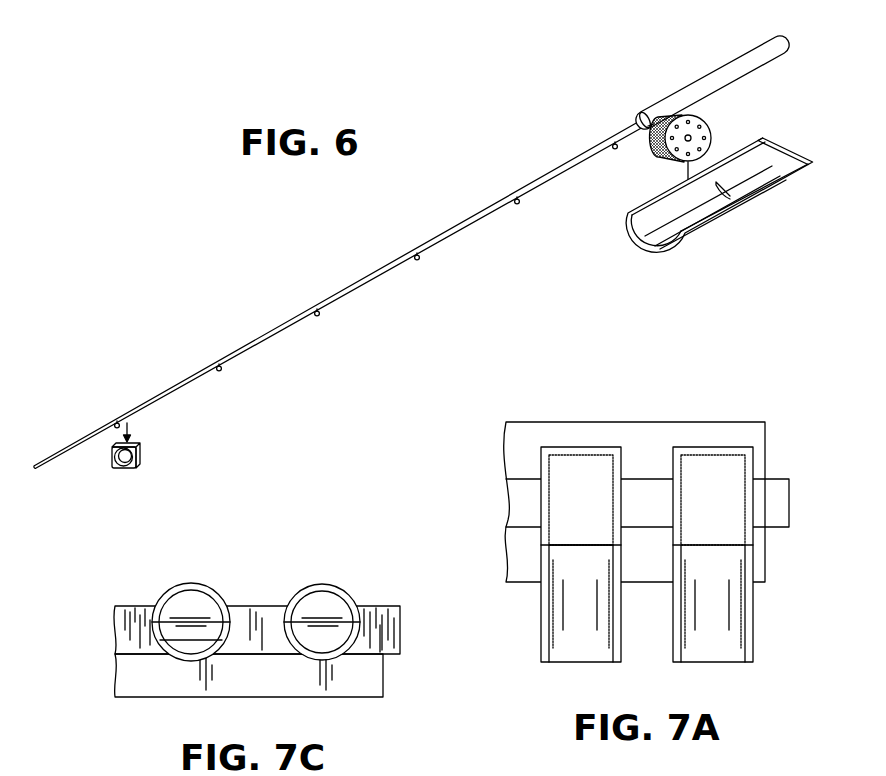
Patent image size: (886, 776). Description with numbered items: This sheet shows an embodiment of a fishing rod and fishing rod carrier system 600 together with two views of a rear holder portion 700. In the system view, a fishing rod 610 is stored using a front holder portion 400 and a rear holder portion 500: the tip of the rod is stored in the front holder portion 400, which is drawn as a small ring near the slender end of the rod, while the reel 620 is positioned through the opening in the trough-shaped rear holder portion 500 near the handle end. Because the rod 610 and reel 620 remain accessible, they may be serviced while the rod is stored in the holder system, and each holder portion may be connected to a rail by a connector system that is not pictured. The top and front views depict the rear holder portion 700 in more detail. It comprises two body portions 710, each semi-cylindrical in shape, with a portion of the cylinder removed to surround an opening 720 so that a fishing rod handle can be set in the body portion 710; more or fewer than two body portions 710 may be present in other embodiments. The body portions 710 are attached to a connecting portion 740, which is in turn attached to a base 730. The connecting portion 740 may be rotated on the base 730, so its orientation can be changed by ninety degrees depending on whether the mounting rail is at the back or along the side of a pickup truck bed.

In FIG. 6, the fishing rod and fishing rod carrier system 600 is at (423, 256).
In FIG. 6, the fishing rod 610 is at (662, 96).
In FIG. 6, the reel 620 is at (712, 128).
In FIG. 6, the rear holder portion 500 is at (717, 224).
In FIG. 6, the front holder portion 400 is at (140, 456).
In FIG. 7C, the rear holder portion 700 is at (242, 629).
In FIG. 7A, the rear holder portion 700 is at (625, 547).
In FIG. 7C, the body portion 710 is at (190, 583).
In FIG. 7A, the body portion 710 is at (565, 665).
In FIG. 7C, the opening 720 is at (188, 640).
In FIG. 7A, the opening 720 is at (578, 593).
In FIG. 7C, the base 730 is at (305, 685).
In FIG. 7A, the base 730 is at (758, 436).
In FIG. 7C, the connecting portion 740 is at (398, 622).
In FIG. 7A, the connecting portion 740 is at (782, 503).